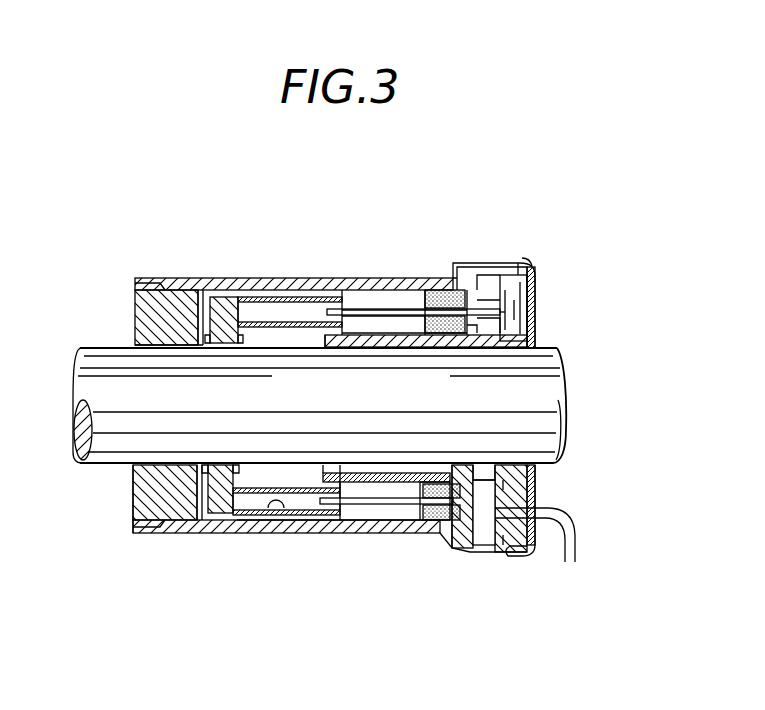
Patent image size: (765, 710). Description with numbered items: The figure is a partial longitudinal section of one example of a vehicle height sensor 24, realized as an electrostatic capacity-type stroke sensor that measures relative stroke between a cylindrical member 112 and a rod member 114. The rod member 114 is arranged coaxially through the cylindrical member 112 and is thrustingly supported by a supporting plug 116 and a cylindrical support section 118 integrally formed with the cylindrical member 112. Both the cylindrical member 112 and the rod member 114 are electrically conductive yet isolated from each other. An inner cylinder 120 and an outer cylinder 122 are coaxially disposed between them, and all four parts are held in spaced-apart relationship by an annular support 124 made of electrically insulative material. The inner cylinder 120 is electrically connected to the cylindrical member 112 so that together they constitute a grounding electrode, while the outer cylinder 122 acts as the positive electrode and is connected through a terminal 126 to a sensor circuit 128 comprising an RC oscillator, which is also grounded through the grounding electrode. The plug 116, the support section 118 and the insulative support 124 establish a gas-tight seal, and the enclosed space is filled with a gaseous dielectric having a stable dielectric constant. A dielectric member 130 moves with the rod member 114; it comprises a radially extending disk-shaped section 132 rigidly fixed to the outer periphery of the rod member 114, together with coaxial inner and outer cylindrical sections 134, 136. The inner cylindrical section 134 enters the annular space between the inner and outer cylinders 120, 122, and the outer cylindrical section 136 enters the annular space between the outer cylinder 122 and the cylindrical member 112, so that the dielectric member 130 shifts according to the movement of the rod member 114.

The height sensor 24 is at (420, 236).
The cylindrical member 112 is at (285, 278).
The rod member 114 is at (563, 388).
The supporting plug 116 is at (137, 489).
The cylindrical support section 118 is at (513, 332).
The inner cylinder 120 is at (399, 340).
The outer cylinder 122 is at (368, 303).
The annular support 124 is at (440, 290).
The terminal 126 is at (478, 305).
The sensor circuit 128 is at (510, 293).
The dielectric member 130 is at (230, 533).
The disk-shaped section 132 is at (214, 297).
The inner cylindrical section 134 is at (302, 327).
The outer cylindrical section 136 is at (284, 510).